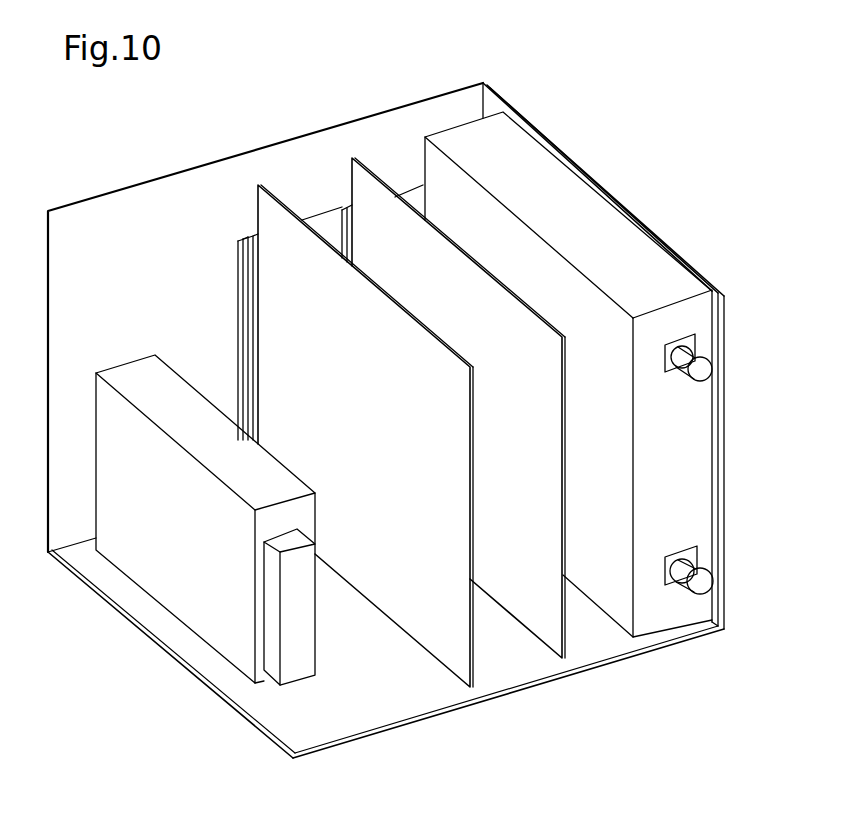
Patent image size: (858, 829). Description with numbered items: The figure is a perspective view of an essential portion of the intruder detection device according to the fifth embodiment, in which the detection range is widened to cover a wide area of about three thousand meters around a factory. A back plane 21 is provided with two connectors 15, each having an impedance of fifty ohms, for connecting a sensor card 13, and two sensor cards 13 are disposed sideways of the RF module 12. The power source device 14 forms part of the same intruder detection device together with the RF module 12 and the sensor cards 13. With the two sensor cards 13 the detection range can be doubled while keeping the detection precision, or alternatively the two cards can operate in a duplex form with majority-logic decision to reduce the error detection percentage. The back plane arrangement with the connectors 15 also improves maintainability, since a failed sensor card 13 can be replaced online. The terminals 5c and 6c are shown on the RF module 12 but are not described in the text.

The RF module 12 is at (586, 218).
The sensor card 13 is at (275, 212).
The power source device 14 is at (140, 552).
The connector 15 is at (245, 292).
The back plane 21 is at (250, 235).
The positive terminal 5c is at (703, 370).
The negative terminal 6c is at (702, 577).